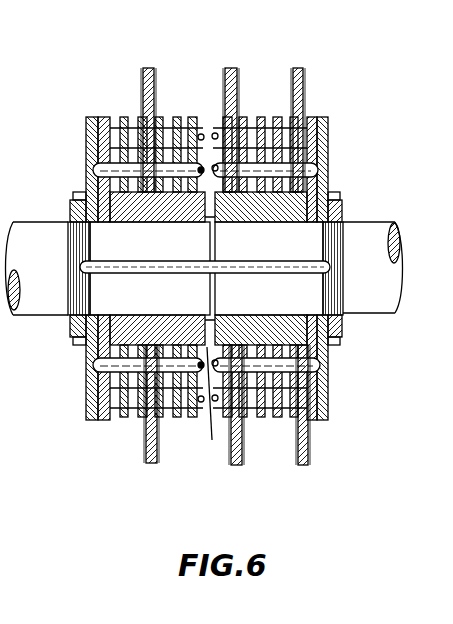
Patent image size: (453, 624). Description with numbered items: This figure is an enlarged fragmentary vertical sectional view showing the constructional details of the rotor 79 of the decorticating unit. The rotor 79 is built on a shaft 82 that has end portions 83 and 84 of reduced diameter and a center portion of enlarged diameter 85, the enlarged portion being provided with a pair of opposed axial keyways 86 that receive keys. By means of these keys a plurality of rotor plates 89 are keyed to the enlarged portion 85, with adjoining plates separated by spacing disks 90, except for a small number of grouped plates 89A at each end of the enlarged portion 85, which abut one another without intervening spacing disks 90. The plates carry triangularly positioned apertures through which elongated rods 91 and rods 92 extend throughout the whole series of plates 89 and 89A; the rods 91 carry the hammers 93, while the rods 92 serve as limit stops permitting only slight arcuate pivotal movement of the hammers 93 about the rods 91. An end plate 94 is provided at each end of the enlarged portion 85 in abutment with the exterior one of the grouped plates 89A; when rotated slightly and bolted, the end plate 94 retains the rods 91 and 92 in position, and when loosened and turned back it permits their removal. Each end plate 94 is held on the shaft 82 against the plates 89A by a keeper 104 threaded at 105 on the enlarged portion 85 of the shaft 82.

The rotor 79 is at (329, 107).
The shaft 82 is at (388, 219).
The end portion 83 is at (382, 302).
The end portion 84 is at (37, 307).
The center portion of enlarged diameter 85 is at (182, 300).
The axial keyway 86 is at (282, 264).
The rotor plate 89 is at (189, 418).
The grouped plate 89A is at (109, 421).
The spacing disk 90 is at (212, 440).
The rod 91 is at (310, 167).
The rod 92 is at (118, 398).
The hammer 93 is at (230, 67).
The end plate 94 is at (86, 119).
The keeper 104 is at (74, 192).
The threaded portion 105 is at (72, 220).